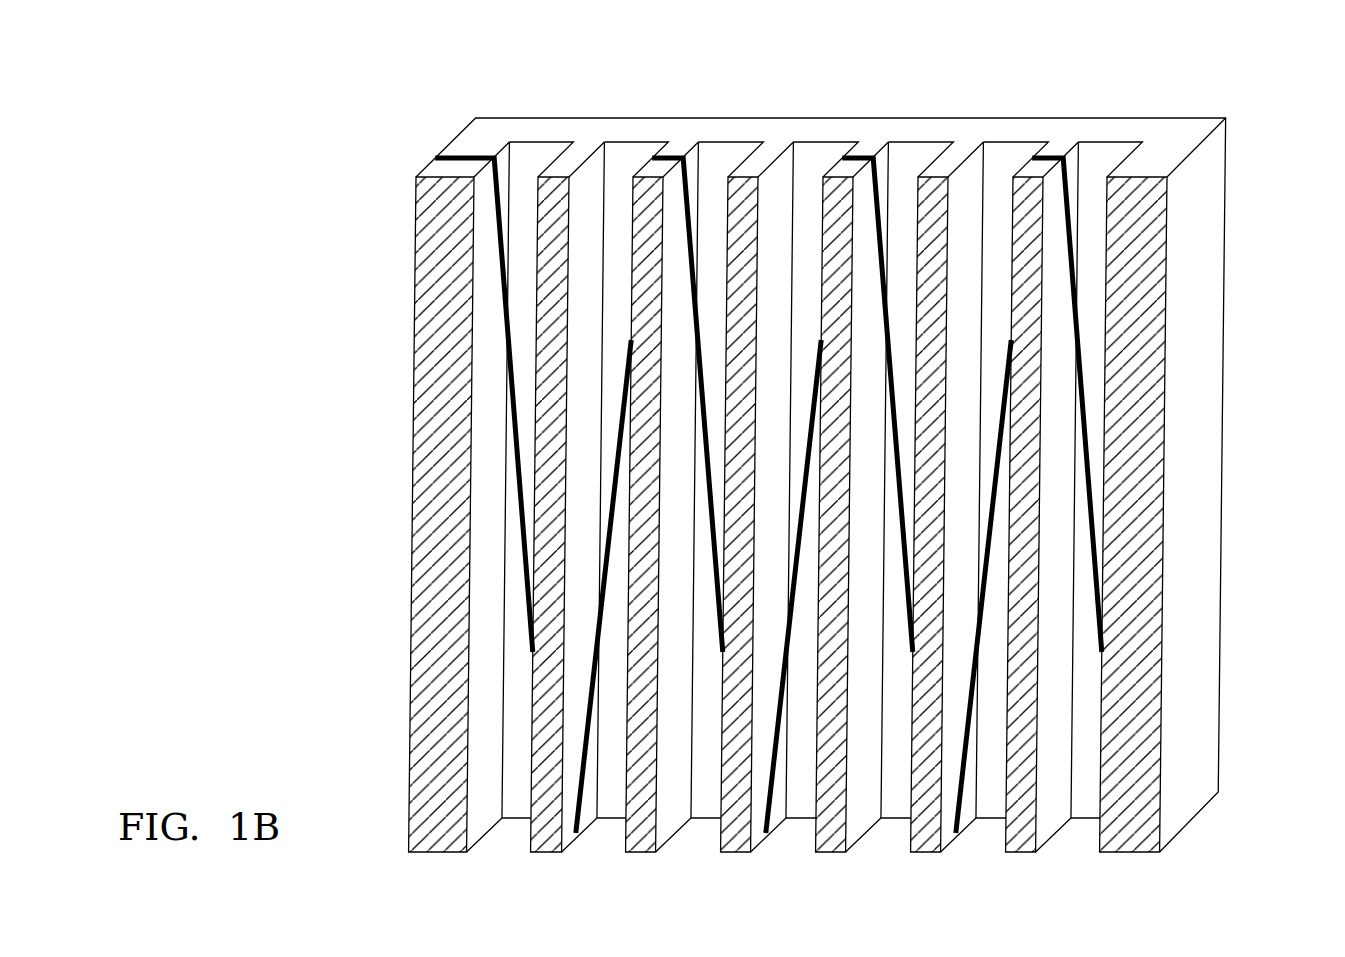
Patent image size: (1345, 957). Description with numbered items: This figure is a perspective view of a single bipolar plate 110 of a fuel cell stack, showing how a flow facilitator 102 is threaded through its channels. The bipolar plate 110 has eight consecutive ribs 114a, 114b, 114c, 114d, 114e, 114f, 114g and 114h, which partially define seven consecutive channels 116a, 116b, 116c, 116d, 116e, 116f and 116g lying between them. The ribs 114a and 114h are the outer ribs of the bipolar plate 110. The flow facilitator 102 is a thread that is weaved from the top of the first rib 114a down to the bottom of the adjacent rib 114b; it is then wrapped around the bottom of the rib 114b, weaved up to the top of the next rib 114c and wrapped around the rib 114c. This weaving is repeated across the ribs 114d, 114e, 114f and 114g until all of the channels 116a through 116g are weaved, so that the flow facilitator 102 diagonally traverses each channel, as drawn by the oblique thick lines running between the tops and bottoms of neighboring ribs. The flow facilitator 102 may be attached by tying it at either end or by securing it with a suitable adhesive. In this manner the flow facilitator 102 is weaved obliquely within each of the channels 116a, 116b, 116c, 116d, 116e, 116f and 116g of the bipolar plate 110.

The flow facilitator 102 is at (453, 157).
The bipolar plate 110 is at (1213, 237).
The first rib 114a is at (447, 840).
The rib 114b is at (543, 840).
The rib 114c is at (638, 840).
The rib 114d is at (733, 840).
The rib 114e is at (833, 840).
The rib 114f is at (922, 840).
The rib 114g is at (1017, 840).
The rib 114h is at (1140, 840).
The channel 116a is at (540, 158).
The channel 116b is at (635, 158).
The channel 116c is at (730, 158).
The channel 116d is at (825, 158).
The channel 116e is at (920, 158).
The channel 116f is at (1015, 158).
The channel 116g is at (1108, 158).